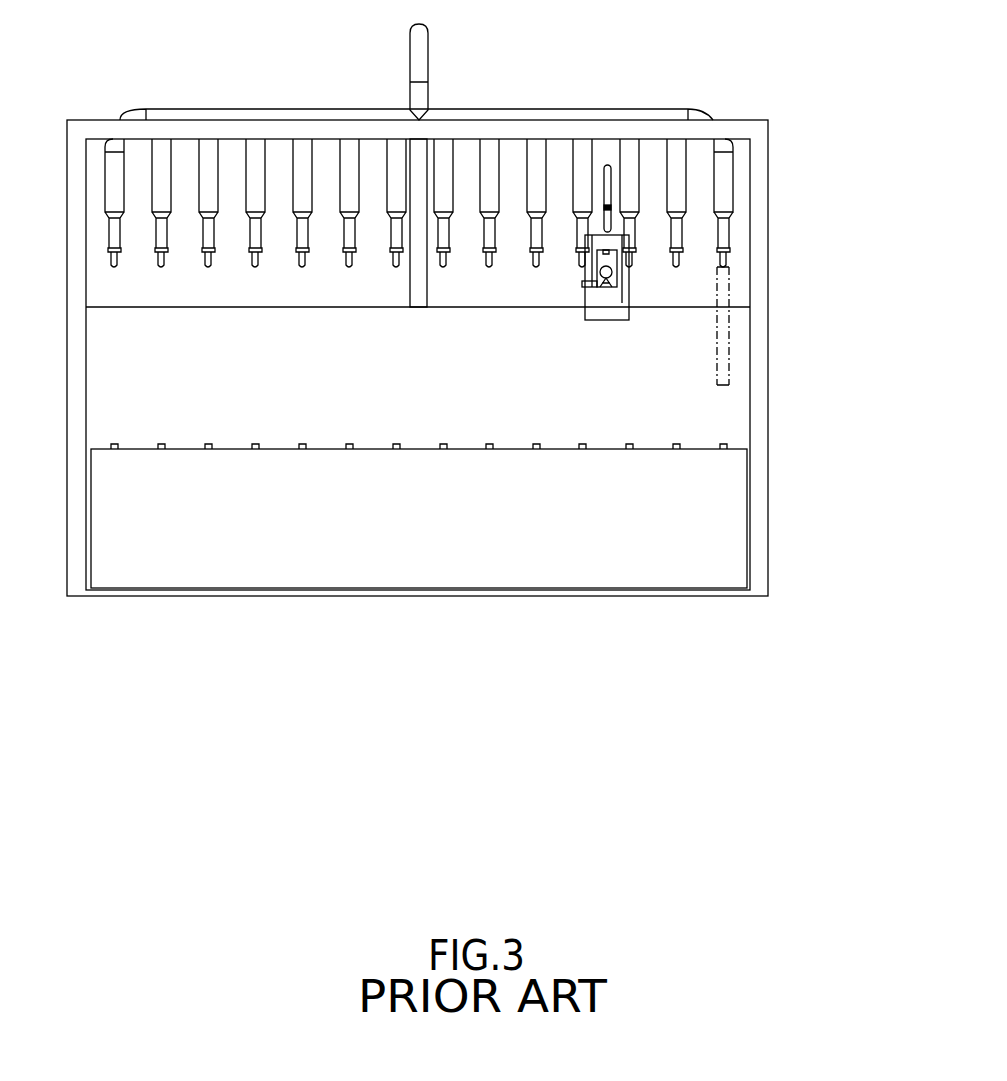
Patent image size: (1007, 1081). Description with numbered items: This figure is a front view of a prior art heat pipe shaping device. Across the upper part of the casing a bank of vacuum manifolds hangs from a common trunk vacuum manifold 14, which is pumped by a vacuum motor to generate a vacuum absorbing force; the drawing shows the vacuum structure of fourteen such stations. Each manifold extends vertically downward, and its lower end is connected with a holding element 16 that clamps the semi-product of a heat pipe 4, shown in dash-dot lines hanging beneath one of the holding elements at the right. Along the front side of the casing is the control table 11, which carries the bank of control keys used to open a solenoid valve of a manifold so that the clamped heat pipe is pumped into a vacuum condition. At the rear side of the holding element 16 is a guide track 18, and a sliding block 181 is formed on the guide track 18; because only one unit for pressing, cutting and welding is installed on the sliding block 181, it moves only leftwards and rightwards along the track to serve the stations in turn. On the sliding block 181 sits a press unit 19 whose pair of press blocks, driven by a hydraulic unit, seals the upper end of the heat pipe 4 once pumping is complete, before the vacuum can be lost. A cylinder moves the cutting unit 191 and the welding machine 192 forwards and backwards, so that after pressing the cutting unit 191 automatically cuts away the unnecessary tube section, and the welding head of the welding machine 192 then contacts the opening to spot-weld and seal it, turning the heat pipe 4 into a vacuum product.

The trunk vacuum manifold 14 is at (724, 179).
The holding element 16 is at (722, 237).
The welding machine 192 is at (607, 203).
The cutting unit 191 is at (585, 270).
The press unit 19 is at (588, 292).
The sliding block 181 is at (612, 306).
The heat pipe 4 is at (722, 327).
The guide track 18 is at (715, 406).
The control table 11 is at (727, 537).